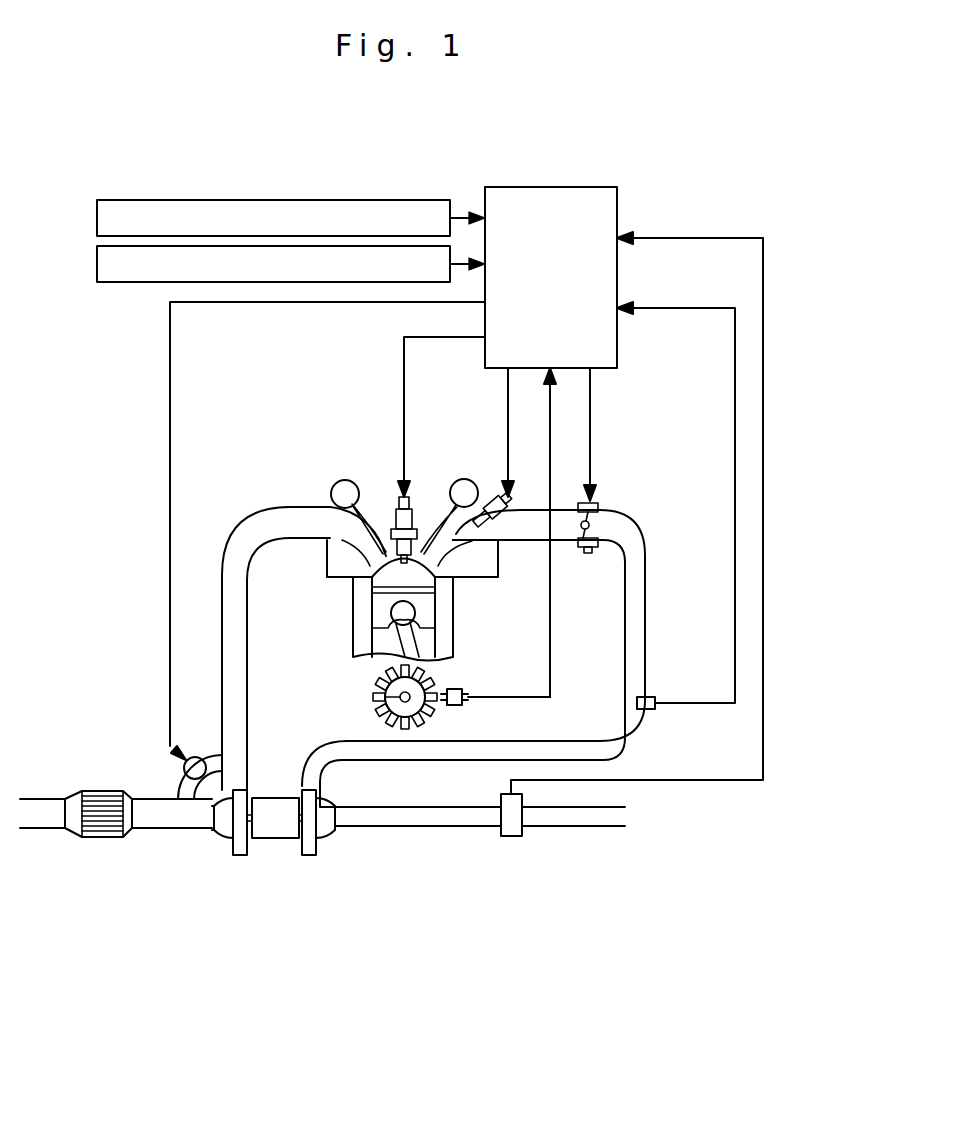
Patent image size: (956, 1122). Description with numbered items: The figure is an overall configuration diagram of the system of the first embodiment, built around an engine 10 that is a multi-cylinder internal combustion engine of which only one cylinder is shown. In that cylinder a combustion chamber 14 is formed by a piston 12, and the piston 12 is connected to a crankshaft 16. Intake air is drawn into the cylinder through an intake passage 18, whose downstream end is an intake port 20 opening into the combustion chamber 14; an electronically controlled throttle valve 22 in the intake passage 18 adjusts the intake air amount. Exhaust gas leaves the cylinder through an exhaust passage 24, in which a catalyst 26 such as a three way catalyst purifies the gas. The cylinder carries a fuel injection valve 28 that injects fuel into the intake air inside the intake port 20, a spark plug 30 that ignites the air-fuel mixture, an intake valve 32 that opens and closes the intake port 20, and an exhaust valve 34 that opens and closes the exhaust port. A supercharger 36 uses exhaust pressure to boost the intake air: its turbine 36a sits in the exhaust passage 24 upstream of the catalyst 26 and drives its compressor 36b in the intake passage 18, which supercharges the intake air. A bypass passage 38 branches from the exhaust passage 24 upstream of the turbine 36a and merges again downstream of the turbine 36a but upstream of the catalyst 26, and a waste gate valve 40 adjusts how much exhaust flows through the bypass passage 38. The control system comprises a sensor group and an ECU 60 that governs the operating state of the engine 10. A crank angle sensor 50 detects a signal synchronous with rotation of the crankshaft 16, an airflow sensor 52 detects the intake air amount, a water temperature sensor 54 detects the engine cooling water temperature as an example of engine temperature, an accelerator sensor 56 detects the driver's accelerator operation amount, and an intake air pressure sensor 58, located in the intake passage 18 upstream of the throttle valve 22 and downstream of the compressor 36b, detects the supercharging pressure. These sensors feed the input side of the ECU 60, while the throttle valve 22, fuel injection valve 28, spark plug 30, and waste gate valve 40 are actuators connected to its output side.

The engine 10 is at (338, 611).
The piston 12 is at (382, 622).
The combustion chamber 14 is at (390, 571).
The crankshaft 16 is at (385, 700).
The intake passage 18 is at (648, 586).
The intake port 20 is at (480, 548).
The throttle valve 22 is at (598, 512).
The exhaust passage 24 is at (250, 530).
The catalyst 26 is at (103, 832).
The fuel injection valve 28 is at (484, 498).
The spark plug 30 is at (386, 503).
The intake valve 32 is at (440, 500).
The exhaust valve 34 is at (363, 495).
The supercharger 36 is at (292, 868).
The turbine 36a is at (231, 838).
The compressor 36b is at (330, 838).
The bypass passage 38 is at (181, 801).
The waste gate valve 40 is at (197, 757).
The crank angle sensor 50 is at (463, 690).
The airflow sensor 52 is at (511, 836).
The water temperature sensor 54 is at (97, 213).
The accelerator sensor 56 is at (97, 262).
The intake air pressure sensor 58 is at (651, 697).
The ECU 60 is at (551, 193).